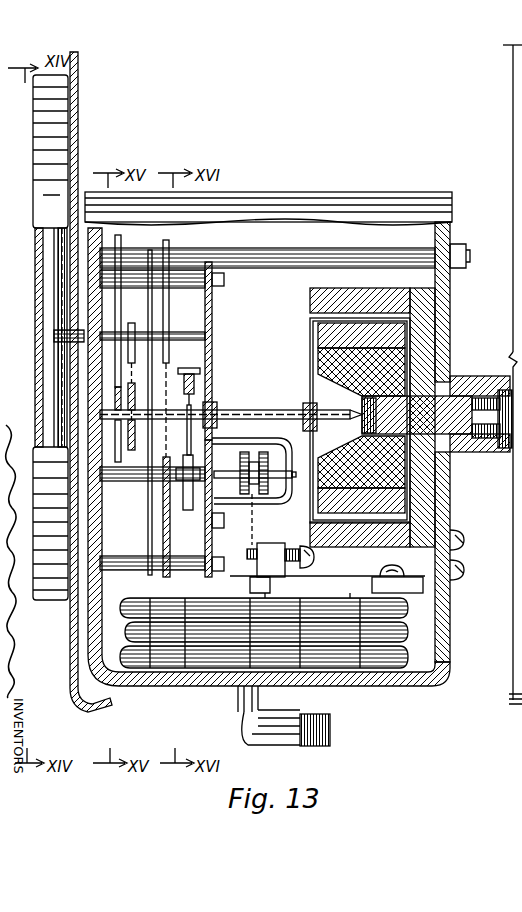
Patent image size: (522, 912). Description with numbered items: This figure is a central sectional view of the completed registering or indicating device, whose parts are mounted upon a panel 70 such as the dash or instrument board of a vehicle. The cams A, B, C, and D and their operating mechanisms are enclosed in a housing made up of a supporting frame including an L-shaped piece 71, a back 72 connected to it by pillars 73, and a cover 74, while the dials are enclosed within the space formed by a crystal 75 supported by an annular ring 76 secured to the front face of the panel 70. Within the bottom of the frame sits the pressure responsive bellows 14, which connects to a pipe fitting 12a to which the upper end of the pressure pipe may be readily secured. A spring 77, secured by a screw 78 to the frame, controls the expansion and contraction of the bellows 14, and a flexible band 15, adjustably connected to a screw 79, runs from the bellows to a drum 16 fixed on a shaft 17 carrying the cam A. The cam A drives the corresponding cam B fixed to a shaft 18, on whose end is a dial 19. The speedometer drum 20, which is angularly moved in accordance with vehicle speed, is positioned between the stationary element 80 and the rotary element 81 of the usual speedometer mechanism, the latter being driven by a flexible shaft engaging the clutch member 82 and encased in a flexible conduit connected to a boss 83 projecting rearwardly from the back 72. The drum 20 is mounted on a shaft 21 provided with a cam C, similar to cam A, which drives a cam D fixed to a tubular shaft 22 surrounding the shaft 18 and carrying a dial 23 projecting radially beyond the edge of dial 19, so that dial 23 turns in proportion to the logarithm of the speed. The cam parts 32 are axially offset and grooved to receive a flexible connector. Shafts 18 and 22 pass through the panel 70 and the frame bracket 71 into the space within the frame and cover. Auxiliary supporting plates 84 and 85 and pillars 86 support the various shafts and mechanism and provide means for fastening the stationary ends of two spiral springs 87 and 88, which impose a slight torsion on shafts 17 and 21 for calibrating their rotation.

The panel 70 is at (113, 710).
The annular ring 76 is at (33, 184).
The crystal 75 is at (37, 408).
The dial 19 is at (58, 256).
The dial 23 is at (60, 290).
The tubular shaft 22 is at (84, 362).
The L-shaped piece 71 is at (404, 688).
The back 72 is at (448, 577).
The cover 74 is at (283, 208).
The pillars 73 is at (335, 250).
The stationary element 80 is at (405, 298).
The clutch member 82 is at (453, 390).
The boss 83 is at (496, 455).
The rotary element 81 is at (397, 473).
The drum 20 is at (309, 365).
The shaft 21 is at (273, 412).
The shaft 18 is at (207, 332).
The flexible band 15 is at (252, 535).
The auxiliary supporting plate 85 is at (268, 441).
The drum 16 is at (258, 486).
The spiral spring 88 is at (191, 450).
The spiral spring 87 is at (205, 388).
The parts 32 is at (165, 540).
The cam B is at (156, 306).
The cam D is at (130, 300).
The cam A is at (147, 535).
The cam C is at (132, 463).
The shaft 17 is at (145, 462).
The pillars 86 is at (152, 572).
The auxiliary supporting plate 84 is at (207, 580).
The spring 77 is at (322, 577).
The screw 79 is at (297, 565).
The screw 78 is at (383, 567).
The bellows 14 is at (358, 610).
The pipe fitting 12a is at (330, 728).